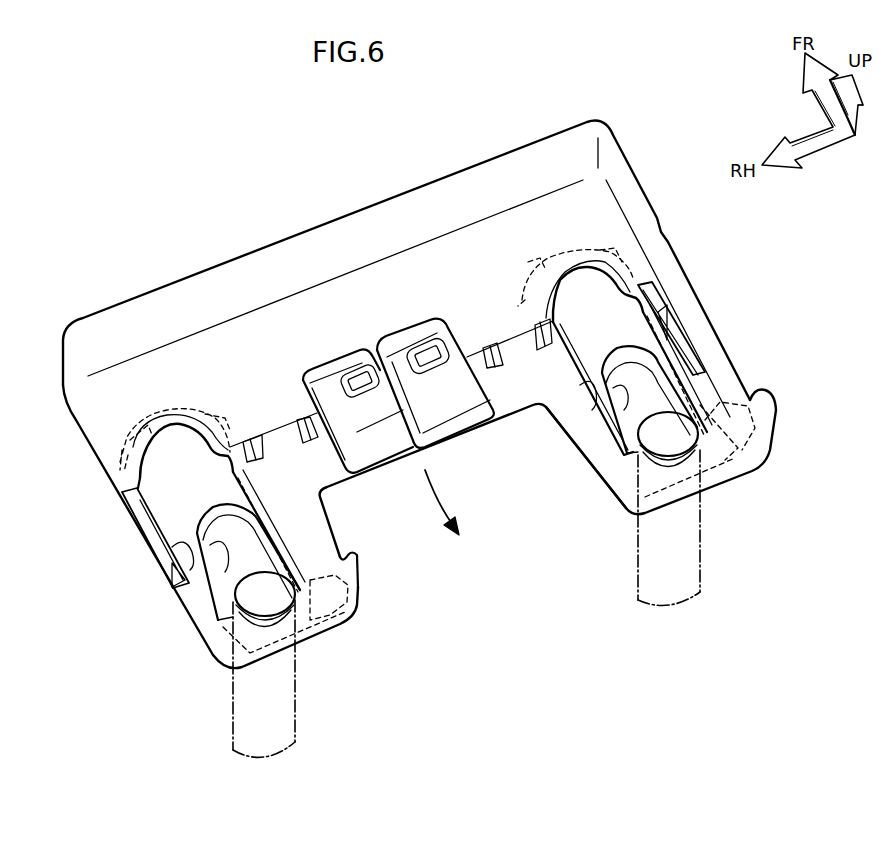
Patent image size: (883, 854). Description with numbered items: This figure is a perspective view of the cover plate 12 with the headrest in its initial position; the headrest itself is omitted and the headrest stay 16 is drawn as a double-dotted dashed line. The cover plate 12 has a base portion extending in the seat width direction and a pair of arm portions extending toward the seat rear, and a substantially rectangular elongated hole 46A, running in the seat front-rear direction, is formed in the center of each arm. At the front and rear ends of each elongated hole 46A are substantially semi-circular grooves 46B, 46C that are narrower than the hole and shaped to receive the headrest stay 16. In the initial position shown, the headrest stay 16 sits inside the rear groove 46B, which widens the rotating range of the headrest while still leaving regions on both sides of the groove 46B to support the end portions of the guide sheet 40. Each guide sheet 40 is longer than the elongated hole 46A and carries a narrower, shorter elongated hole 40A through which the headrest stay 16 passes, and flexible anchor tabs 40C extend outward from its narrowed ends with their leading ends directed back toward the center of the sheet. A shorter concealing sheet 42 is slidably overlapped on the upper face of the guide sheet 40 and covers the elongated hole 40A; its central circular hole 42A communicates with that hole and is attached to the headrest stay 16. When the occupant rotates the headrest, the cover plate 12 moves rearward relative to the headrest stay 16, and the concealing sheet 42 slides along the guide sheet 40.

The cover plate 12 is at (354, 215).
The headrest stay 16 is at (300, 715).
The guide sheet 40 is at (175, 514).
The elongated hole 40A is at (220, 597).
The anchor tab 40C is at (133, 462).
The concealing sheet 42 is at (290, 533).
The circular hole 42A is at (307, 570).
The elongated hole 46A is at (177, 590).
The groove 46B is at (293, 610).
The groove 46C is at (158, 471).